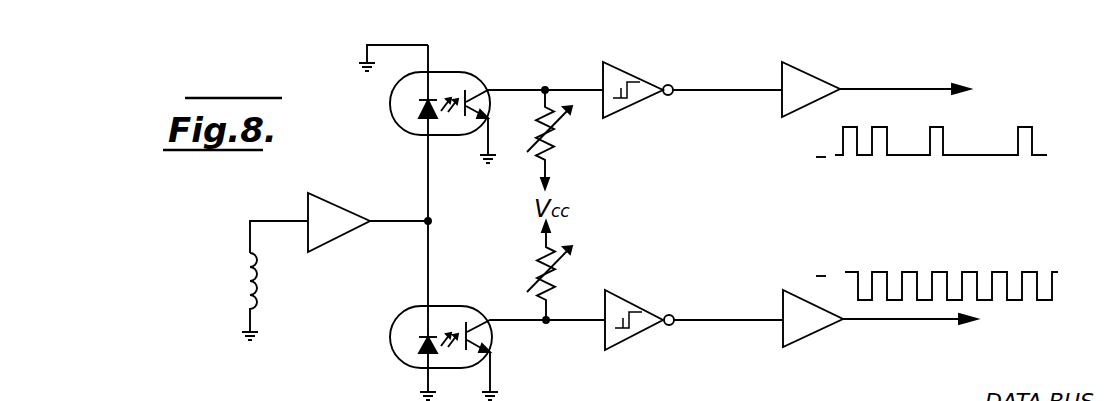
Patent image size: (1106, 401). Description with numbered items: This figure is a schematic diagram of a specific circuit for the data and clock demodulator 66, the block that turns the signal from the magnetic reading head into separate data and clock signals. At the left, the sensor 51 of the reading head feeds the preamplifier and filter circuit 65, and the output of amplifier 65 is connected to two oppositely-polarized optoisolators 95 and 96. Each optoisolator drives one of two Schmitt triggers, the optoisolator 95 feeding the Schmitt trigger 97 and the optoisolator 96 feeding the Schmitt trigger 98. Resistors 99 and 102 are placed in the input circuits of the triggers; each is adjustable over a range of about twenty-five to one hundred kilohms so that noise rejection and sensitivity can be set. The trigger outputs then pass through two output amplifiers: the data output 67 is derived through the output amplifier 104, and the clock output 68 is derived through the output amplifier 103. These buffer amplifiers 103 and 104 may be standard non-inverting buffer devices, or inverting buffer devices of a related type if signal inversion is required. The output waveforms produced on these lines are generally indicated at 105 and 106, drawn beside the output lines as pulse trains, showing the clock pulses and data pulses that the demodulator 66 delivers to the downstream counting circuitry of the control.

The sensor 51 is at (218, 280).
The preamplifier and filter circuit 65 is at (351, 209).
The data and clock demodulator 66 is at (693, 187).
The data output 67 is at (937, 74).
The clock output 68 is at (950, 336).
The optoisolator 95 is at (475, 353).
The optoisolator 96 is at (496, 97).
The Schmitt trigger 97 is at (694, 308).
The Schmitt trigger 98 is at (692, 74).
The resistor 99 is at (529, 272).
The resistor 102 is at (576, 138).
The output amplifier 103 is at (799, 339).
The output amplifier 104 is at (806, 73).
The output waveform 105 is at (927, 262).
The output waveform 106 is at (922, 165).